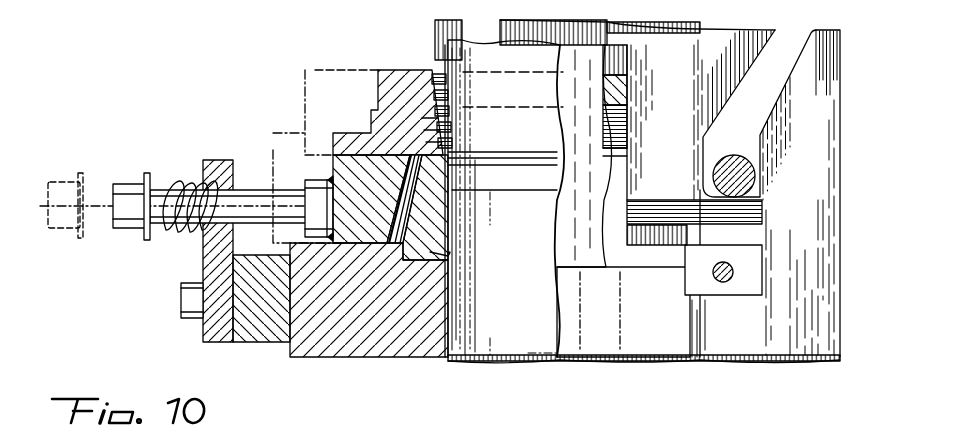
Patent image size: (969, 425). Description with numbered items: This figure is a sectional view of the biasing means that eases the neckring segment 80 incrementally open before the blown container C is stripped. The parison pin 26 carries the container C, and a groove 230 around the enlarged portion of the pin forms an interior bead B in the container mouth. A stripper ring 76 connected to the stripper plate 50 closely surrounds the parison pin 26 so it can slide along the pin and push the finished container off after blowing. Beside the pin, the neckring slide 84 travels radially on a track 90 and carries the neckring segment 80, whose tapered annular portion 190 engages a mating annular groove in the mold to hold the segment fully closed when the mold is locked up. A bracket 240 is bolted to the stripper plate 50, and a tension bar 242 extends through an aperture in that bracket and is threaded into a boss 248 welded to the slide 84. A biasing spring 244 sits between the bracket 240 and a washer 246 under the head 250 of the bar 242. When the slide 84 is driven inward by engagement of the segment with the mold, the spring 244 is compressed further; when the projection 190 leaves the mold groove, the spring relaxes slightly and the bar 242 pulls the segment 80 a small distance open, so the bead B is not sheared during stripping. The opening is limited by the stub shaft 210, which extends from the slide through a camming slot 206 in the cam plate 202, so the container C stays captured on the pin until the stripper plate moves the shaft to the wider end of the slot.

The parison pin 26 is at (512, 343).
The stripper plate 50 is at (338, 345).
The stripper ring 76 is at (627, 150).
The neckring segment 80 is at (367, 110).
The neckring slide 84 is at (332, 147).
The track 90 is at (663, 203).
The tapered annular portion 190 is at (372, 78).
The cam plate 202 is at (690, 78).
The camming slot 206 is at (776, 82).
The stub shaft 210 is at (735, 153).
The groove 230 is at (533, 152).
The bracket 240 is at (207, 328).
The tension bar 242 is at (236, 200).
The biasing spring 244 is at (180, 185).
The washer 246 is at (147, 228).
The boss 248 is at (303, 190).
The head 250 is at (128, 183).
The interior bead B is at (457, 152).
The blown container C is at (438, 62).